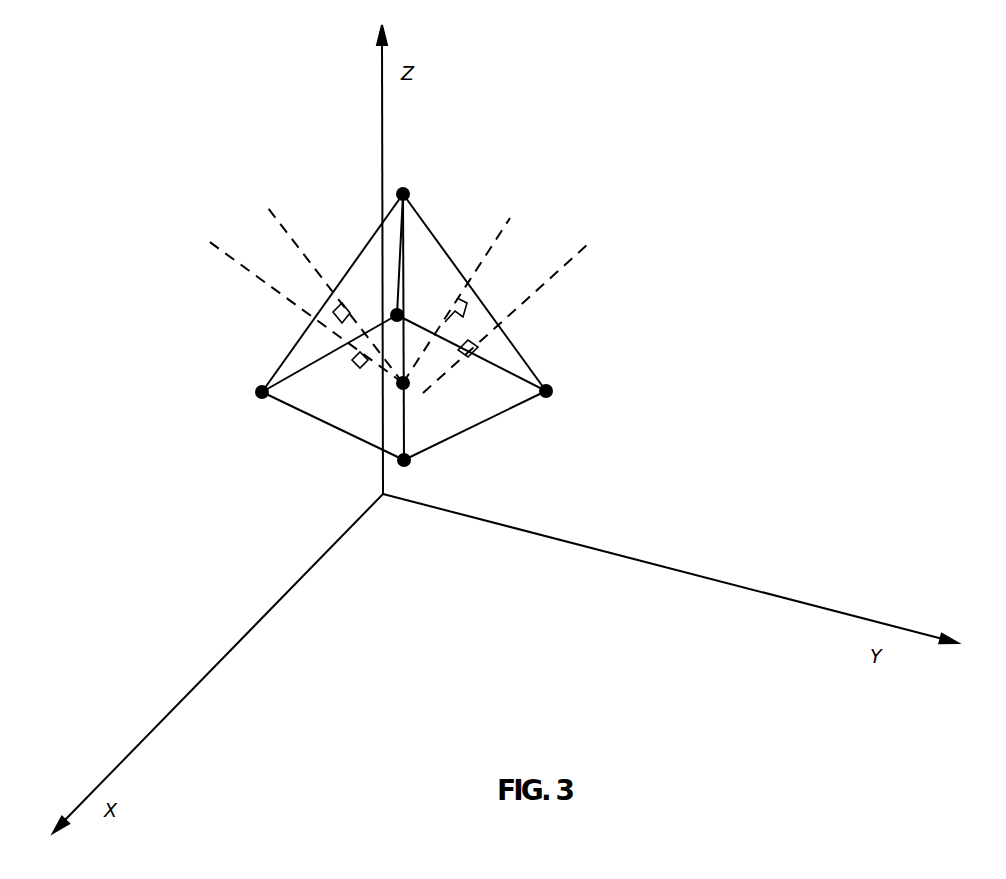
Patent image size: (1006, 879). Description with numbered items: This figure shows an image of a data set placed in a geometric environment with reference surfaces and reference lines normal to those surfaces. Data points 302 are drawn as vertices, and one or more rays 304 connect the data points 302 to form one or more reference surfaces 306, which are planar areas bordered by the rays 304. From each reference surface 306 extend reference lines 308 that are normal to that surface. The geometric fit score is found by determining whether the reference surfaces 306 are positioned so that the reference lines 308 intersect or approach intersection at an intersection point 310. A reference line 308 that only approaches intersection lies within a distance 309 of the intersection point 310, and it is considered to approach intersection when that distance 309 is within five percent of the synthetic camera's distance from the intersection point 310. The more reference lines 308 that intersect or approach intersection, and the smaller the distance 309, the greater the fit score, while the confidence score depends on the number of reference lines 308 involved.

The data points 302 is at (409, 190).
The rays 304 is at (325, 422).
The reference surfaces 306 is at (293, 343).
The reference lines 308 is at (285, 228).
The distance 309 is at (407, 389).
The intersection point 310 is at (397, 380).